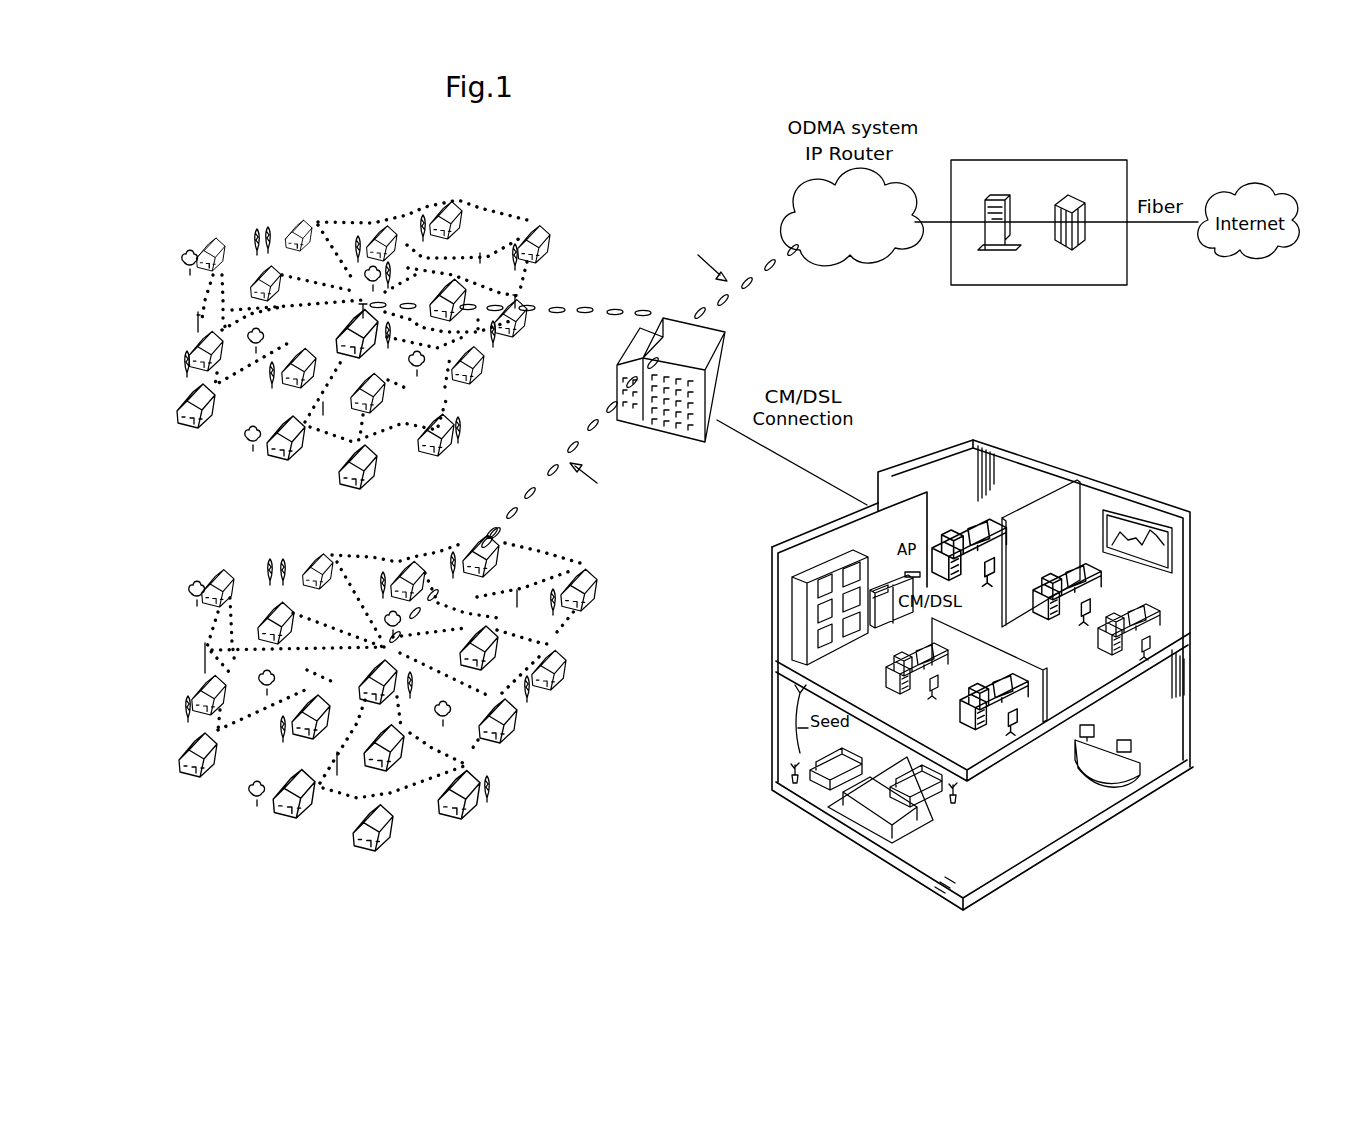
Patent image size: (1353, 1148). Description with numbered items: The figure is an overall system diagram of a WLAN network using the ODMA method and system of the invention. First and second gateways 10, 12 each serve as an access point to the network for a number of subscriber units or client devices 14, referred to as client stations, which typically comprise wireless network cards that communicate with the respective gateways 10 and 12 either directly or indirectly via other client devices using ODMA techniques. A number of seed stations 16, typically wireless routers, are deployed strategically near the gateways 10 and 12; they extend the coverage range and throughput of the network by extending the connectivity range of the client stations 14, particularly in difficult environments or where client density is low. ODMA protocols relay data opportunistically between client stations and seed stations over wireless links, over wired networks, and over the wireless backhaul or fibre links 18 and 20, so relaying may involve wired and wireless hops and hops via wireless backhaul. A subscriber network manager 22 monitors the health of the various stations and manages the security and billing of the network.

The first gateway 10 is at (378, 340).
The second gateway 12 is at (397, 693).
The client devices 14 is at (523, 333).
The seed stations 16 is at (195, 331).
The wireless backhaul link 18 is at (528, 492).
The wireless backhaul or fibre link 20 is at (733, 297).
The subscriber network manager 22 is at (1127, 268).